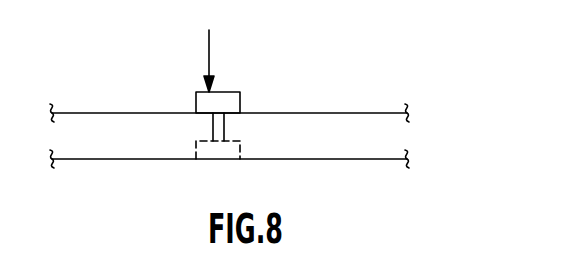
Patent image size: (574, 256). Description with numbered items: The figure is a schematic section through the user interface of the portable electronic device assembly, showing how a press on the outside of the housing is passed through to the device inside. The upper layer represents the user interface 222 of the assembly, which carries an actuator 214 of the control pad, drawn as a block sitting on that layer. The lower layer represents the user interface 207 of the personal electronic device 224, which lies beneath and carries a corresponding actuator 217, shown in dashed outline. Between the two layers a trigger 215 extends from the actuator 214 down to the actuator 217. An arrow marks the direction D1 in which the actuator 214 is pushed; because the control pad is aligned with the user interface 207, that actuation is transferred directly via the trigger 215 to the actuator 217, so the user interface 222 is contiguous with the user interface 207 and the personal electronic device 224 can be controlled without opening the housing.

The direction D1 is at (209, 52).
The actuator 214 is at (222, 92).
The trigger 215 is at (213, 128).
The actuator 217 is at (225, 150).
The user interface 222 is at (292, 113).
The user interface 207 is at (292, 159).
The personal electronic device 224 is at (137, 160).